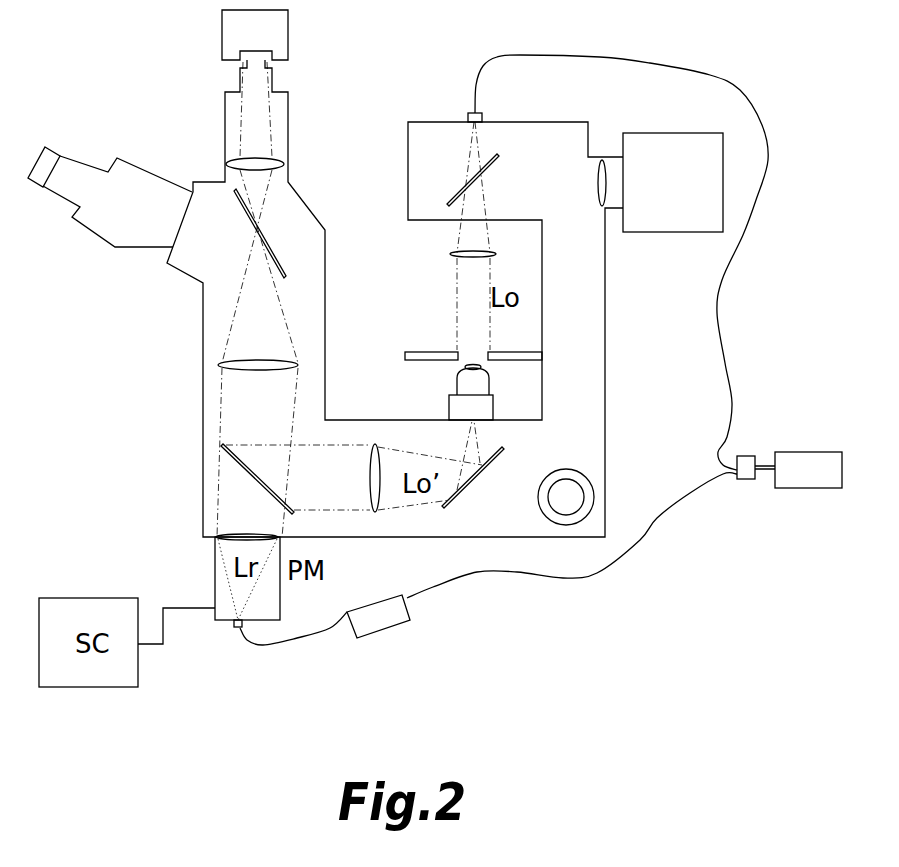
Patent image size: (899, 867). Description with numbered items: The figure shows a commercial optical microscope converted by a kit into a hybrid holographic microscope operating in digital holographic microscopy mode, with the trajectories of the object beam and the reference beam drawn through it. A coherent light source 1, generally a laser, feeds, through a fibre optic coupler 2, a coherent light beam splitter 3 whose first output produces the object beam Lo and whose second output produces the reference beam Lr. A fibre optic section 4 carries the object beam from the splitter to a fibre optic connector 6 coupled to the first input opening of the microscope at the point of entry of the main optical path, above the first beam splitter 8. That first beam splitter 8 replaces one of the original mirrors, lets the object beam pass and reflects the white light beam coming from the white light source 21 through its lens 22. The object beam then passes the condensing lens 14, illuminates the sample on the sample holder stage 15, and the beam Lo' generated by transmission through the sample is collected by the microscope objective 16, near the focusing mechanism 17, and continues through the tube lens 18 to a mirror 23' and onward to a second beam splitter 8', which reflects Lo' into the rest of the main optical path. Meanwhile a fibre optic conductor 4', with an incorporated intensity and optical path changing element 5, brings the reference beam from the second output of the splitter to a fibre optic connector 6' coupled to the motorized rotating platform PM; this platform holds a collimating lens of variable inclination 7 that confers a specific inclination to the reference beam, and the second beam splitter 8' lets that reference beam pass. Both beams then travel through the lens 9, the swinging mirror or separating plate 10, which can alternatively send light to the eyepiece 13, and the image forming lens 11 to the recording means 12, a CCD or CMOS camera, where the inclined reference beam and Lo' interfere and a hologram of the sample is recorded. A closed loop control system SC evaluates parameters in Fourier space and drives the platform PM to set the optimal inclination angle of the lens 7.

The coherent light source 1 is at (808, 470).
The fibre optic coupler 2 is at (765, 453).
The coherent light beam splitter 3 is at (745, 487).
The fibre optic section 4 is at (631, 262).
The fibre optic conductor 4' is at (488, 559).
The intensity and optical path changing element 5 is at (378, 634).
The fibre optic connector 6 is at (462, 104).
The fibre optic connector 6' is at (225, 639).
The collimating lens of variable inclination 7 is at (247, 521).
The first beam splitter 8 is at (462, 180).
The second beam splitter 8' is at (257, 479).
The lens 9 is at (270, 363).
The swinging mirror or separating plate 10 is at (269, 233).
The image forming lens 11 is at (280, 168).
The recording means 12 is at (278, 35).
The eyepiece 13 is at (102, 180).
The condensing lens 14 is at (451, 248).
The sample holder stage 15 is at (453, 359).
The microscope objective 16 is at (448, 393).
The focusing mechanism 17 is at (566, 477).
The tube lens 18 is at (390, 465).
The white light source 21 is at (673, 182).
The lens 22 is at (582, 186).
The mirror 23' is at (477, 478).